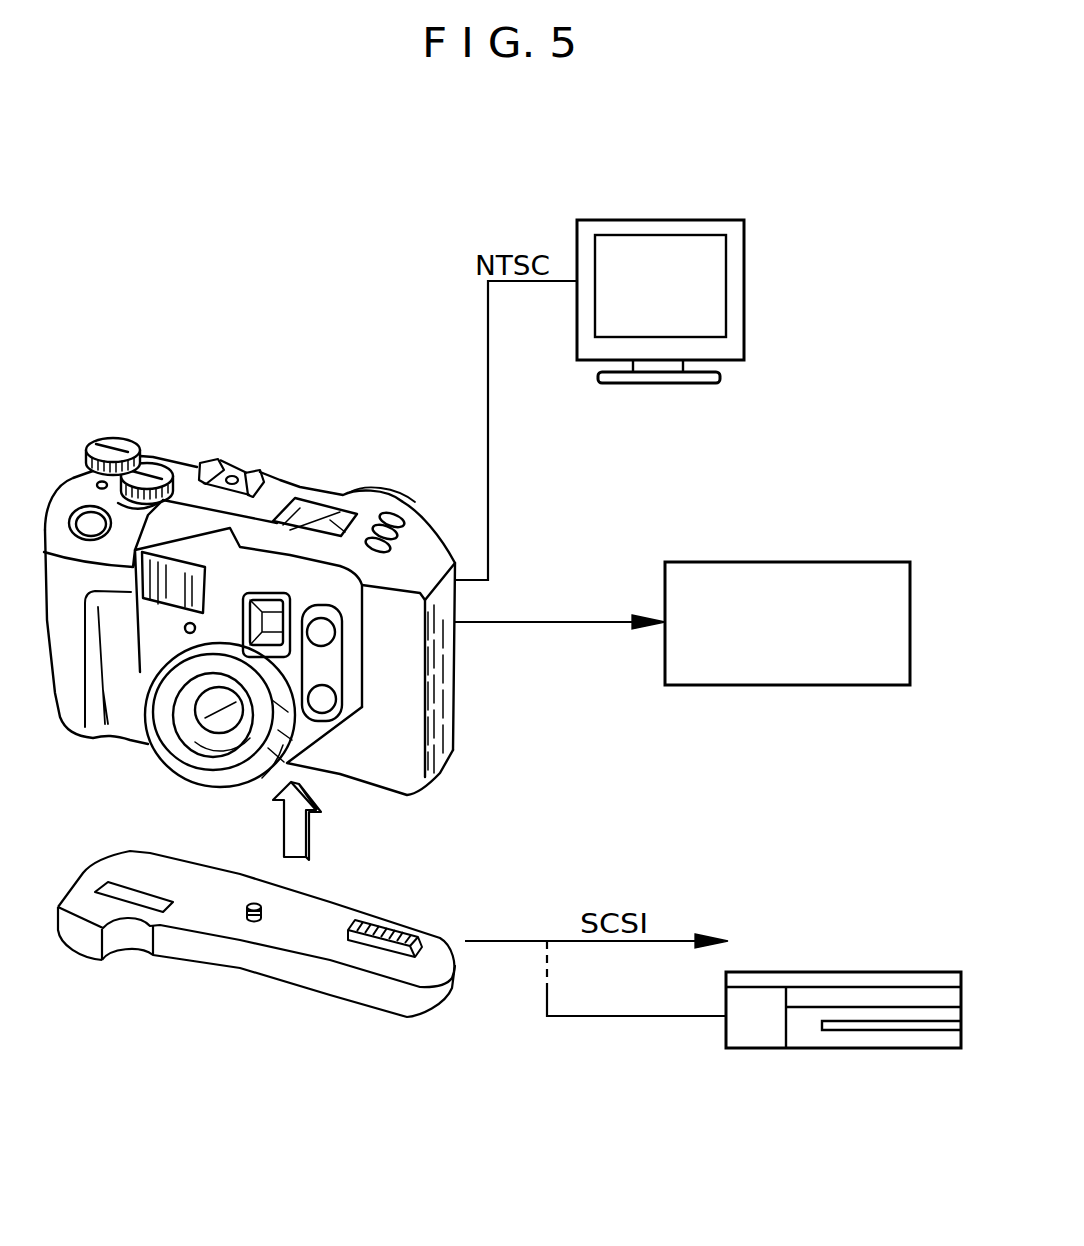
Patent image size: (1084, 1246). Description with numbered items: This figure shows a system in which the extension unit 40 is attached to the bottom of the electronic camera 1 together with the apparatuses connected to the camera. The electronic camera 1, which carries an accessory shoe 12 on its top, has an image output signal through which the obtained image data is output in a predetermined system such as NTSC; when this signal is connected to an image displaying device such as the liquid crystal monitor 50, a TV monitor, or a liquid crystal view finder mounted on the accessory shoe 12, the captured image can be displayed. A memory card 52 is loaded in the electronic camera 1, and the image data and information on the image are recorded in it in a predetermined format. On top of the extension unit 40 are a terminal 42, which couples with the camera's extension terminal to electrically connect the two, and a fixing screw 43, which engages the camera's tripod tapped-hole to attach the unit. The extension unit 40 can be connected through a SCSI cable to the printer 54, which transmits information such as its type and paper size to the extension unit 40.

The electronic camera 1 is at (213, 422).
The accessory shoe 12 is at (253, 470).
The extension unit 40 is at (267, 968).
The terminal 42 is at (408, 925).
The fixing screw 43 is at (254, 905).
The liquid crystal monitor 50 is at (715, 288).
The memory card 52 is at (840, 562).
The printer 54 is at (883, 972).